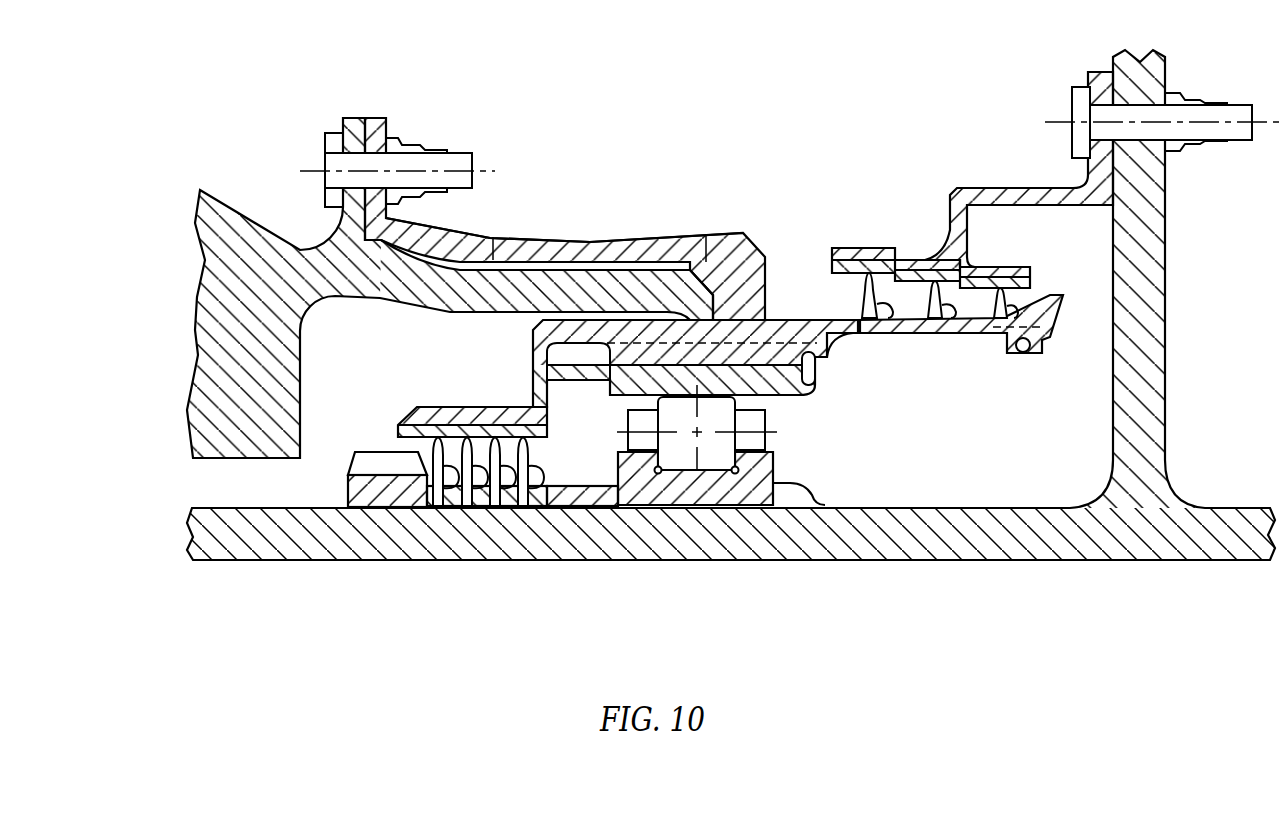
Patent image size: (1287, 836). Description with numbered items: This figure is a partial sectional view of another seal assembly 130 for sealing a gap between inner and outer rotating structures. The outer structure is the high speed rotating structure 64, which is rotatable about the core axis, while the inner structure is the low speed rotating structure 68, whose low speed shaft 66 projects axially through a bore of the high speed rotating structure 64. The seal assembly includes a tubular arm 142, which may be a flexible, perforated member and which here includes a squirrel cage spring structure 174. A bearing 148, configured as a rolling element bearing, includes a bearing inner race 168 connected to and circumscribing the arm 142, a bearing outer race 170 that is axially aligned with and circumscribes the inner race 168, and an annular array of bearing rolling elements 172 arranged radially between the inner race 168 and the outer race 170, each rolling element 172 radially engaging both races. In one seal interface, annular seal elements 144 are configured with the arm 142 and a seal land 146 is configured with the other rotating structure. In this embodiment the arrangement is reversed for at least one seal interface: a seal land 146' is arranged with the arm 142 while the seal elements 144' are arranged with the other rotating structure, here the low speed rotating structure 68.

The high speed rotating structure 64 is at (192, 373).
The low speed shaft 66 is at (190, 535).
The low speed rotating structure 68 is at (300, 565).
The seal assembly 130 is at (998, 165).
The tubular arm 142 is at (764, 235).
The annular seal element 144 is at (940, 335).
The seal element 144' is at (488, 519).
The seal land 146 is at (1031, 284).
The seal land 146' is at (446, 390).
The bearing 148 is at (788, 437).
The bearing inner race 168 is at (775, 455).
The bearing outer race 170 is at (783, 390).
The bearing rolling element 172 is at (676, 474).
The squirrel cage spring structure 174 is at (624, 233).